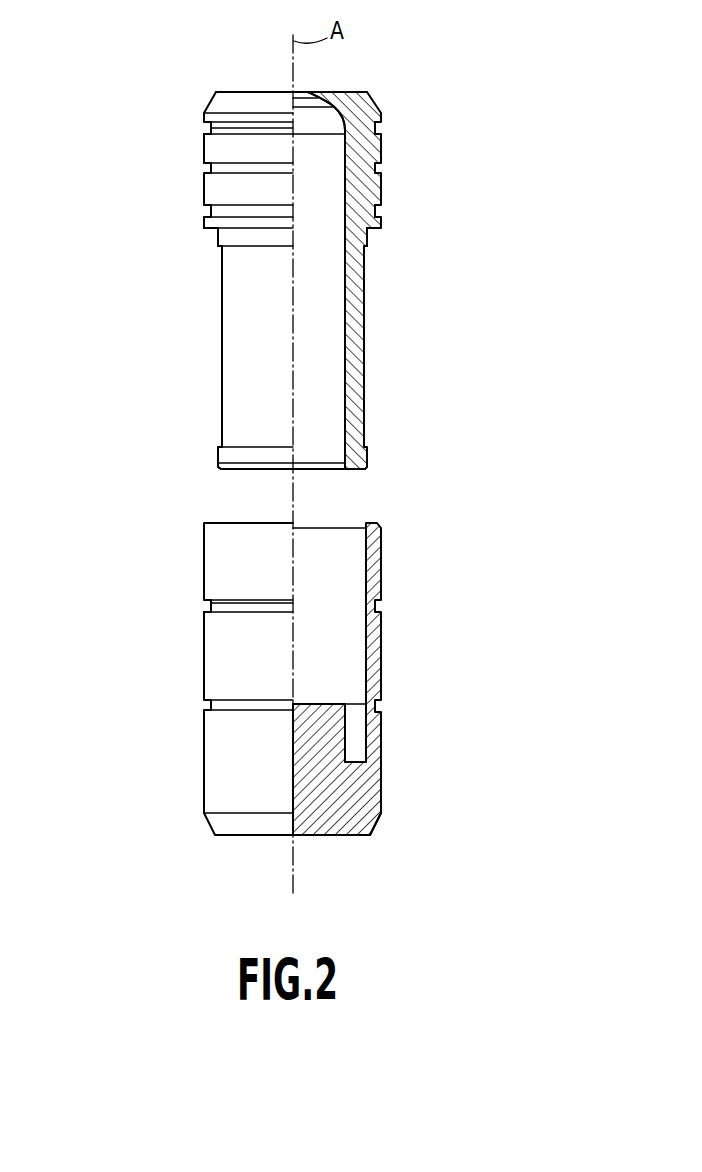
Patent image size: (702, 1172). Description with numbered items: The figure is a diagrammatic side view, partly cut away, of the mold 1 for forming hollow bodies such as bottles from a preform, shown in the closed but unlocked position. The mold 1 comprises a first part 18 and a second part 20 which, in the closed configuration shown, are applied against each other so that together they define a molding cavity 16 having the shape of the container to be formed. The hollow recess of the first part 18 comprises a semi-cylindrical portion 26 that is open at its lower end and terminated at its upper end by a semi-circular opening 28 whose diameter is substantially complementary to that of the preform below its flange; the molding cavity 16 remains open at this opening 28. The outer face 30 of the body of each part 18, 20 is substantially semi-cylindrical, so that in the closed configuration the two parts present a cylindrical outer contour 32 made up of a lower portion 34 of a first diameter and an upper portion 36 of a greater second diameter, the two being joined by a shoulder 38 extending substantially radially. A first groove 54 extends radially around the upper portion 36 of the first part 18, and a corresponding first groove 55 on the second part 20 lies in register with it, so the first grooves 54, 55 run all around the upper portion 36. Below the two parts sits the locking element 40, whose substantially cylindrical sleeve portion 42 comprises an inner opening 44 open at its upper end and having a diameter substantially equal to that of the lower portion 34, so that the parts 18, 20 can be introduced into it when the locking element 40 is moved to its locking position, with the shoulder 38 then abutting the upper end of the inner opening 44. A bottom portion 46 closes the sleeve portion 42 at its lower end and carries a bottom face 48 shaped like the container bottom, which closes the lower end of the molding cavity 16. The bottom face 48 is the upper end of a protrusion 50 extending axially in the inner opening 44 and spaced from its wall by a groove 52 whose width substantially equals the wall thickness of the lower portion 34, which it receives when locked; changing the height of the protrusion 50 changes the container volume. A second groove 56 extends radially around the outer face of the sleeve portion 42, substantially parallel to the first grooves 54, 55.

The mold 1 is at (433, 407).
The molding cavity 16 is at (318, 310).
The first part 18 is at (245, 309).
The second part 20 is at (364, 353).
The semi-cylindrical portion 26 is at (307, 175).
The semi-circular opening 28 is at (333, 92).
The outer face 30 is at (233, 266).
The cylindrical outer contour 32 is at (220, 403).
The lower portion 34 is at (220, 355).
The upper portion 36 is at (213, 147).
The shoulder 38 is at (210, 229).
The first groove 54 is at (215, 128).
The first groove 55 is at (377, 127).
The locking element 40 is at (228, 662).
The sleeve portion 42 is at (225, 563).
The inner opening 44 is at (340, 577).
The bottom portion 46 is at (220, 822).
The bottom face 48 is at (300, 706).
The protrusion 50 is at (327, 745).
The groove 52 is at (355, 728).
The second groove 56 is at (211, 603).